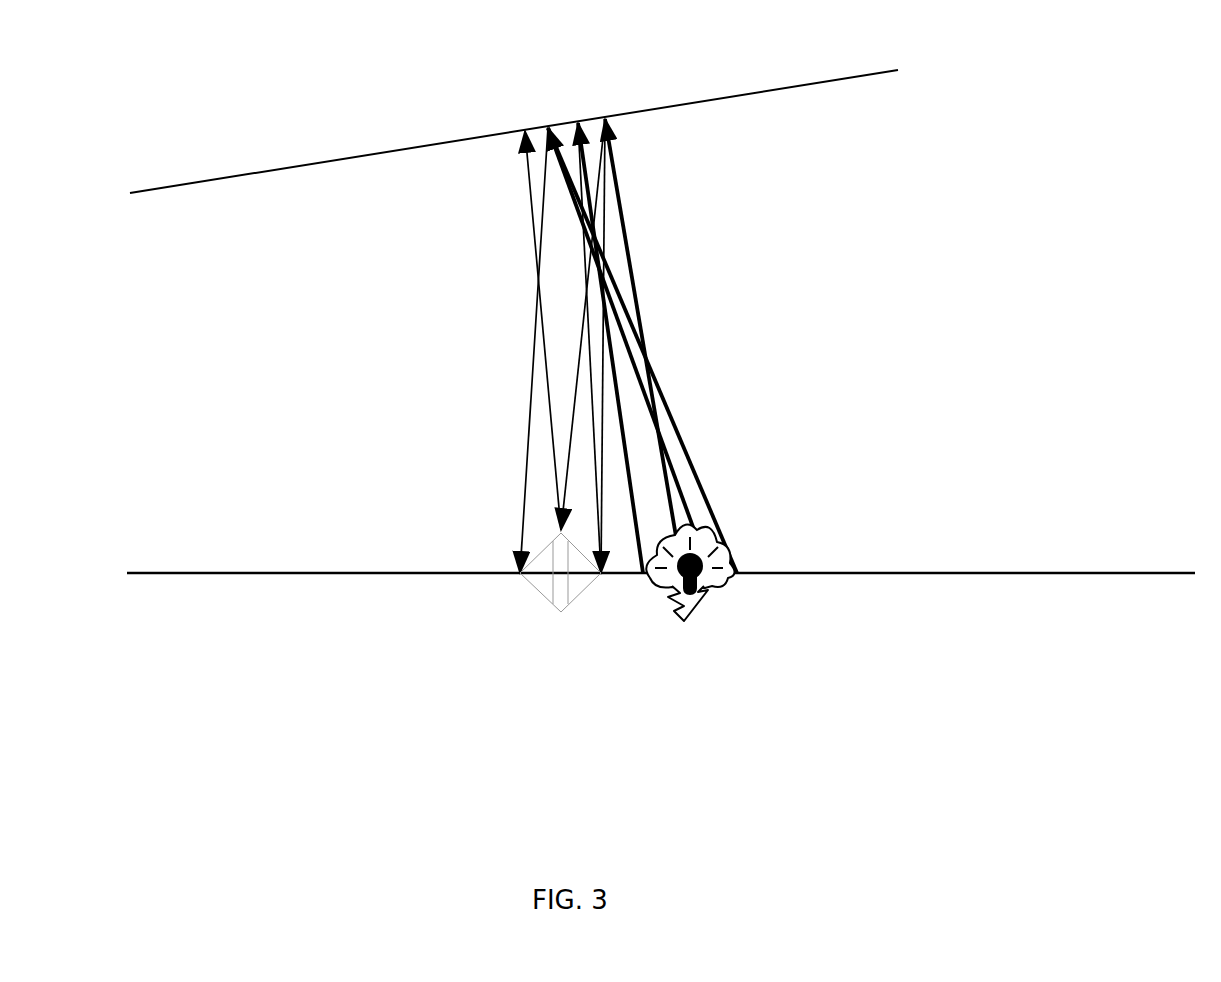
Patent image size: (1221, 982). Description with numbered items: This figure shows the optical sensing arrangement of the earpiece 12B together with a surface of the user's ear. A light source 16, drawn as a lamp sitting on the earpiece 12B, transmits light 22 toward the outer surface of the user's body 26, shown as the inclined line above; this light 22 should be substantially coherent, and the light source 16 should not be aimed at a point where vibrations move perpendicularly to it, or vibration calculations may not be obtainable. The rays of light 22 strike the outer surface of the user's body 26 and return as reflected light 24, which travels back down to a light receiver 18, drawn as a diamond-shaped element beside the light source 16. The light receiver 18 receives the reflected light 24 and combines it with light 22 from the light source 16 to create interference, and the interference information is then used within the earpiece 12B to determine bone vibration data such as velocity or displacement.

The earpiece 12B is at (227, 560).
The outer surface of the user's body 26 is at (686, 103).
The reflected light 24 is at (530, 368).
The light 22 is at (653, 339).
The light receiver 18 is at (560, 614).
The light source 16 is at (688, 620).